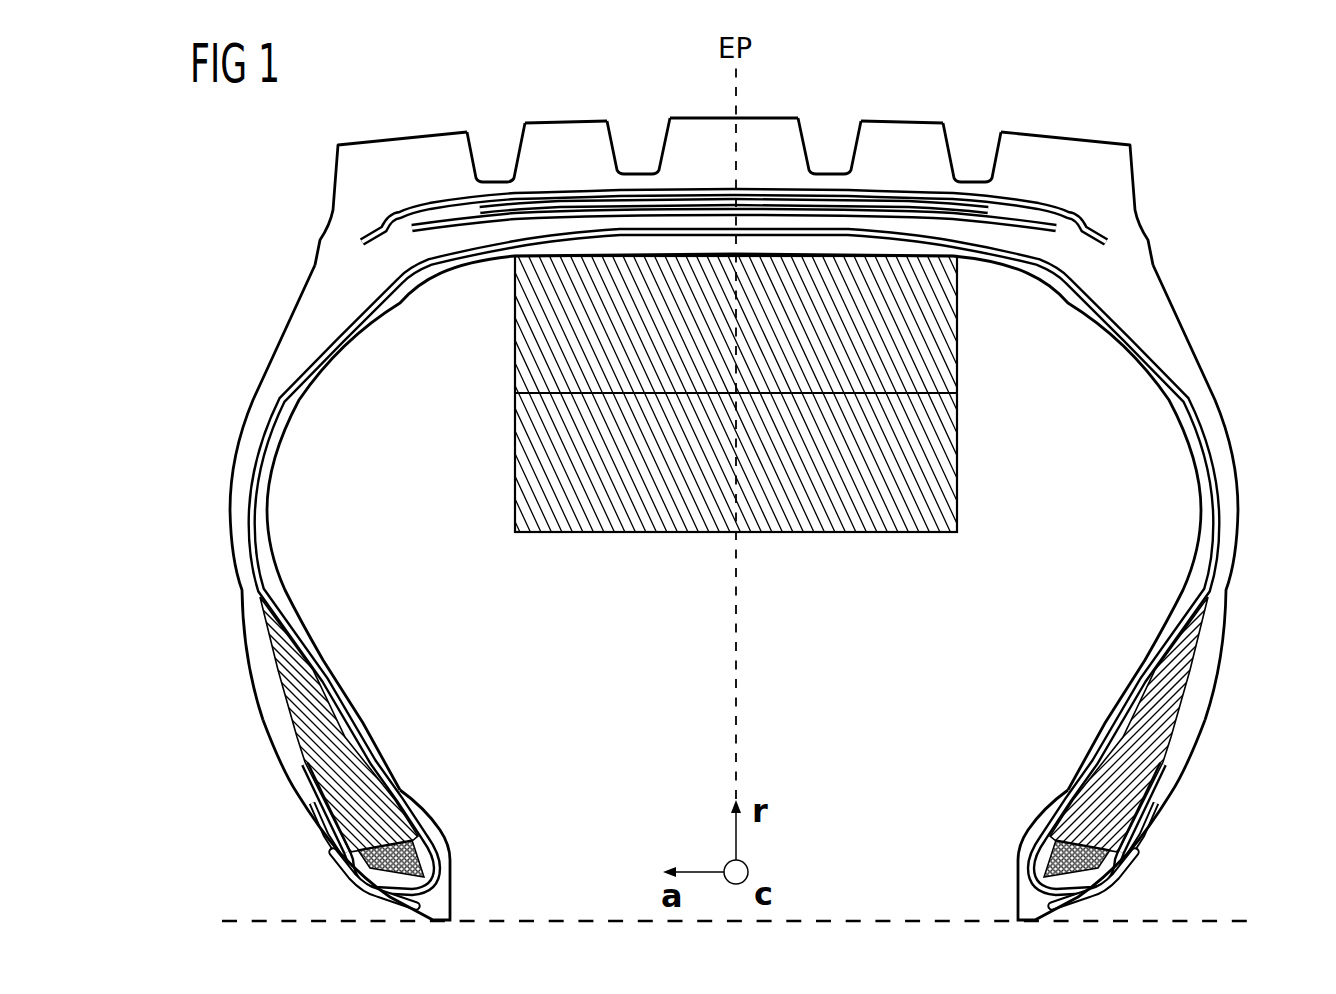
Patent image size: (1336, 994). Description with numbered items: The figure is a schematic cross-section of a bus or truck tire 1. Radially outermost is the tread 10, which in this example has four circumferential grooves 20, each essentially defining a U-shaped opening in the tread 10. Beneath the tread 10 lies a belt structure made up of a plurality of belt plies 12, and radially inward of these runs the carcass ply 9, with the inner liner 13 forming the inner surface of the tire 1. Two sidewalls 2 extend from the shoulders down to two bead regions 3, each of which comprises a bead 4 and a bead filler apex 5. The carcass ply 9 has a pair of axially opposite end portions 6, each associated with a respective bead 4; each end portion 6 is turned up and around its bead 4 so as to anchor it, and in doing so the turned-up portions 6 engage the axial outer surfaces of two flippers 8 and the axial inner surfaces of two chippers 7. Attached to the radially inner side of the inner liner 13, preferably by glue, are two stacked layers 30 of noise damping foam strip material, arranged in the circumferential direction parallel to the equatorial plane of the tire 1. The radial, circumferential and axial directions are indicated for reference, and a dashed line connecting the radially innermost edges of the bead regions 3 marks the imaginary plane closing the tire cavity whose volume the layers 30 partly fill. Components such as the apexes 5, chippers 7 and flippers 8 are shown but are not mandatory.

The tire 1 is at (671, 471).
The sidewalls 2 is at (263, 376).
The bead regions 3 is at (733, 821).
The beads 4 is at (410, 857).
The bead filler apexes 5 is at (342, 742).
The axially opposite end portions of the carcass ply 6 is at (306, 774).
The chippers 7 is at (312, 810).
The flippers 8 is at (333, 853).
The carcass ply 9 is at (322, 338).
The tread 10 is at (1118, 173).
The belt plies 12 is at (665, 190).
The inner liner 13 is at (365, 318).
The circumferential grooves 20 is at (490, 121).
The layers of noise damping foam strip material 30 is at (515, 330).